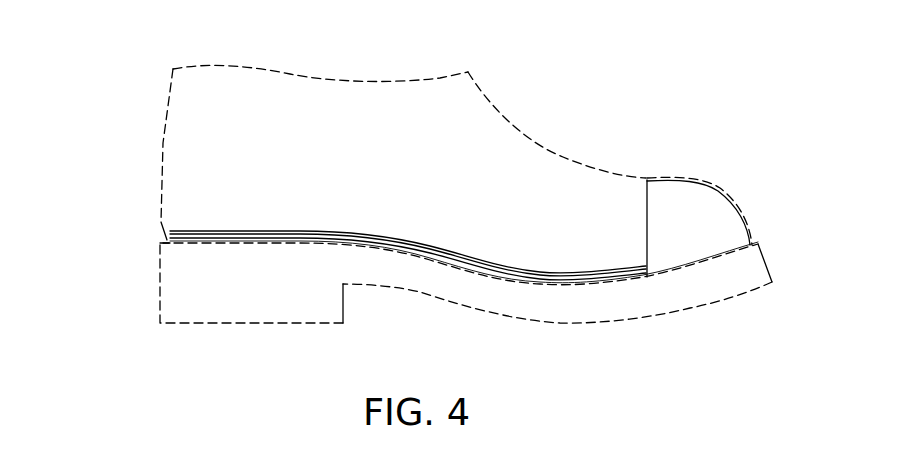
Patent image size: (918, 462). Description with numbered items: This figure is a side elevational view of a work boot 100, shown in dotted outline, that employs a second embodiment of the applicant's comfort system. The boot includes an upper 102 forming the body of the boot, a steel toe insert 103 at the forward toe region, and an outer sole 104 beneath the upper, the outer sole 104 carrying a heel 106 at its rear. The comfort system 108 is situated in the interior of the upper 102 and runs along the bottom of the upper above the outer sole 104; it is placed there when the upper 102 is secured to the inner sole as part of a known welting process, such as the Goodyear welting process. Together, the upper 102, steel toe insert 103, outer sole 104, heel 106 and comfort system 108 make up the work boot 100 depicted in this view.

The work boot 100 is at (410, 193).
The upper 102 is at (307, 97).
The steel toe insert 103 is at (693, 200).
The outer sole 104 is at (608, 302).
The heel 106 is at (252, 290).
The comfort system 108 is at (146, 237).